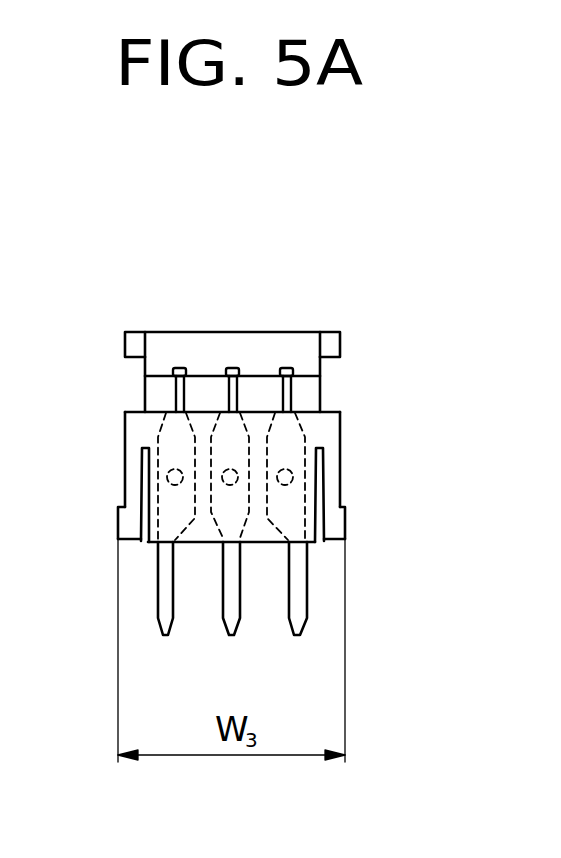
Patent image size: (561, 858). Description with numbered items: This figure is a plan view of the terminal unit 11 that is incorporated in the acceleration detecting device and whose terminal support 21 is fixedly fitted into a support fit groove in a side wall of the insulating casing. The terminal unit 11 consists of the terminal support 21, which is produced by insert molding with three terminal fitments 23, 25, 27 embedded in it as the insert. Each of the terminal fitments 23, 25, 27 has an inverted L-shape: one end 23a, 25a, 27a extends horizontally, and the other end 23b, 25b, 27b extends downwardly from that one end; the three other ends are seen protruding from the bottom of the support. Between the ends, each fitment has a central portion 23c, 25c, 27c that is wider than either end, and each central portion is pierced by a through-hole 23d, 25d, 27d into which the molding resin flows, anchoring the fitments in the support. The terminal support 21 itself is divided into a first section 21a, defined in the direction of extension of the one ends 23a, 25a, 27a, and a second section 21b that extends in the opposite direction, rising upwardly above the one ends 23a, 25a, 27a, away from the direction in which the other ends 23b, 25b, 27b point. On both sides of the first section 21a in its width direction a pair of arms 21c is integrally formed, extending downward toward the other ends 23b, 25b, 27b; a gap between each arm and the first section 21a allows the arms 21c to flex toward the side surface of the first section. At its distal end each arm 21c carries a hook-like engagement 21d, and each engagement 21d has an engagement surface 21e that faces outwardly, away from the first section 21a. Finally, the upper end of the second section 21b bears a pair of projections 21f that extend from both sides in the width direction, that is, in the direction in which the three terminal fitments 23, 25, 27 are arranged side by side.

The terminal unit 11 is at (288, 332).
The terminal support 21 is at (338, 360).
The first section 21a is at (143, 412).
The second section 21b is at (288, 372).
The arms 21c is at (125, 468).
The hook-like engagement 21d is at (120, 523).
The engagement surface 21e is at (118, 503).
The projections 21f is at (125, 343).
The terminal fitment 23 is at (176, 392).
The one end 23a is at (176, 368).
The other end 23b is at (157, 600).
The central portion 23c is at (160, 435).
The through-hole 23d is at (172, 468).
The terminal fitment 25 is at (223, 397).
The one end 25a is at (231, 368).
The other end 25b is at (225, 597).
The central portion 25c is at (228, 479).
The through-hole 25d is at (238, 480).
The terminal fitment 27 is at (293, 392).
The one end 27a is at (305, 336).
The other end 27b is at (307, 603).
The central portion 27c is at (307, 437).
The through-hole 27d is at (292, 482).